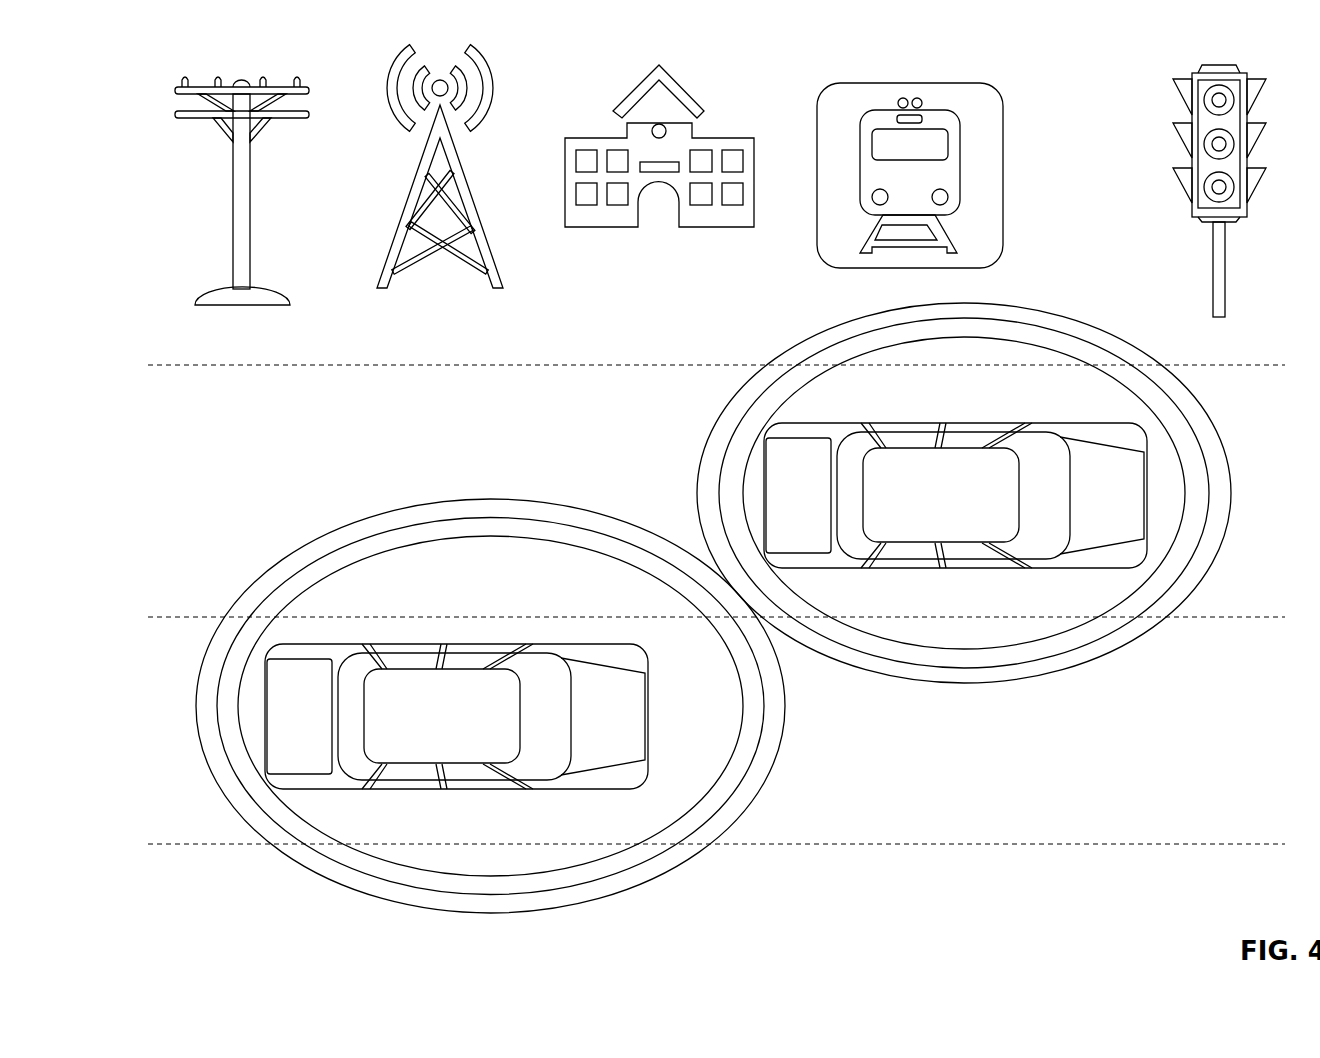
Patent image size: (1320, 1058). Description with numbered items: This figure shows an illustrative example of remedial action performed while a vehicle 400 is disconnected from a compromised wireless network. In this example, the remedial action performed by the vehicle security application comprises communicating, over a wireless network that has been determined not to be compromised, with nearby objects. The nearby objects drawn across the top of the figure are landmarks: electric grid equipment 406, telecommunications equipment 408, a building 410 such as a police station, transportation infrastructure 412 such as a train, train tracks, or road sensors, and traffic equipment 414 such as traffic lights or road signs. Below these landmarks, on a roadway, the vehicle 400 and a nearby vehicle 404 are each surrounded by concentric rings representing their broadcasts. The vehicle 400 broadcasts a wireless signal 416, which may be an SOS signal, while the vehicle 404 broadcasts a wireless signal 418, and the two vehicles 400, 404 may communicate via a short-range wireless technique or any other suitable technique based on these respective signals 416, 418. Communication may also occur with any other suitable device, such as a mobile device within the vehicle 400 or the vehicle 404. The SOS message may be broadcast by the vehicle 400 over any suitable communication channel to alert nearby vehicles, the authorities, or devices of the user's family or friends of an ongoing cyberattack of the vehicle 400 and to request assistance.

The vehicle 400 is at (955, 495).
The vehicle 404 is at (419, 726).
The electric grid equipment 406 is at (263, 289).
The telecommunications equipment 408 is at (378, 290).
The building 410 is at (603, 228).
The transportation infrastructure 412 is at (988, 174).
The traffic equipment 414 is at (1180, 173).
The wireless signal 416 is at (743, 406).
The wireless signal 418 is at (500, 497).